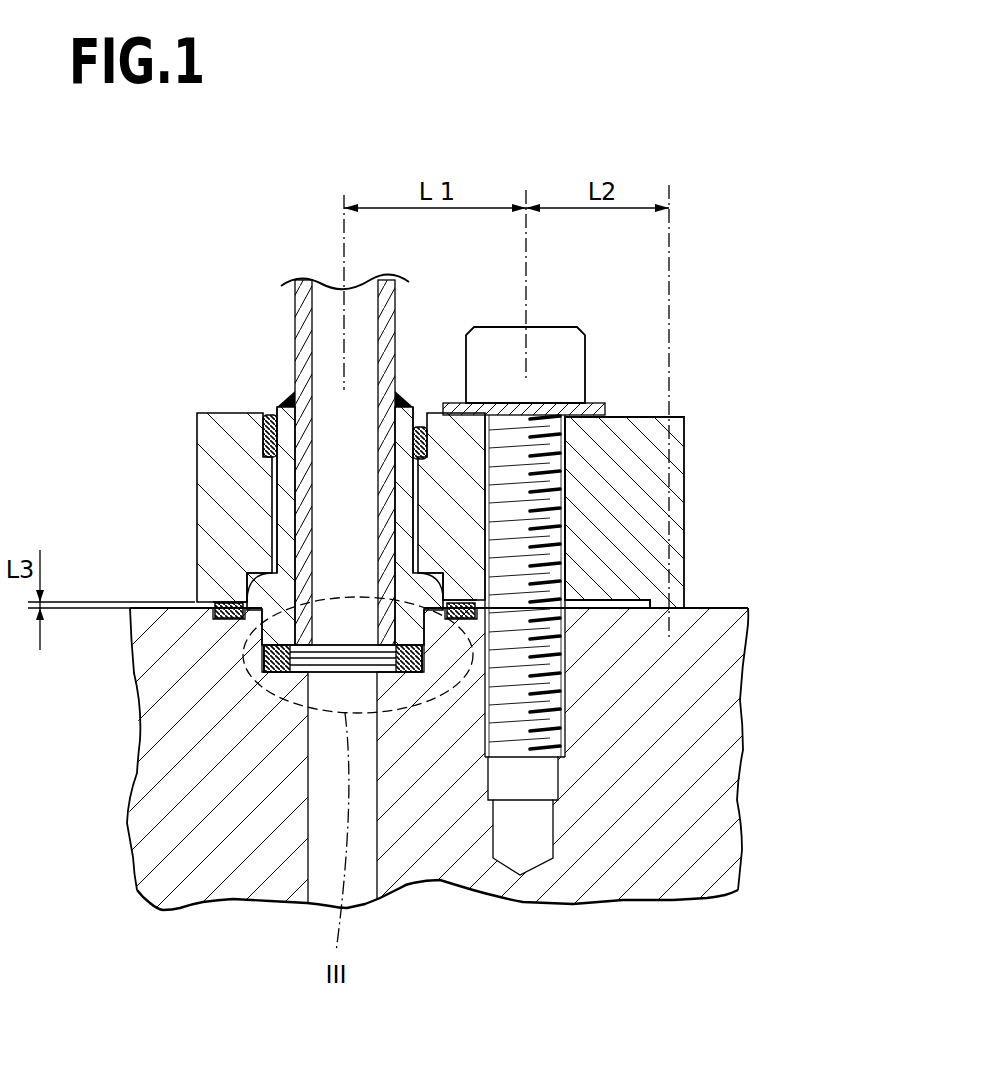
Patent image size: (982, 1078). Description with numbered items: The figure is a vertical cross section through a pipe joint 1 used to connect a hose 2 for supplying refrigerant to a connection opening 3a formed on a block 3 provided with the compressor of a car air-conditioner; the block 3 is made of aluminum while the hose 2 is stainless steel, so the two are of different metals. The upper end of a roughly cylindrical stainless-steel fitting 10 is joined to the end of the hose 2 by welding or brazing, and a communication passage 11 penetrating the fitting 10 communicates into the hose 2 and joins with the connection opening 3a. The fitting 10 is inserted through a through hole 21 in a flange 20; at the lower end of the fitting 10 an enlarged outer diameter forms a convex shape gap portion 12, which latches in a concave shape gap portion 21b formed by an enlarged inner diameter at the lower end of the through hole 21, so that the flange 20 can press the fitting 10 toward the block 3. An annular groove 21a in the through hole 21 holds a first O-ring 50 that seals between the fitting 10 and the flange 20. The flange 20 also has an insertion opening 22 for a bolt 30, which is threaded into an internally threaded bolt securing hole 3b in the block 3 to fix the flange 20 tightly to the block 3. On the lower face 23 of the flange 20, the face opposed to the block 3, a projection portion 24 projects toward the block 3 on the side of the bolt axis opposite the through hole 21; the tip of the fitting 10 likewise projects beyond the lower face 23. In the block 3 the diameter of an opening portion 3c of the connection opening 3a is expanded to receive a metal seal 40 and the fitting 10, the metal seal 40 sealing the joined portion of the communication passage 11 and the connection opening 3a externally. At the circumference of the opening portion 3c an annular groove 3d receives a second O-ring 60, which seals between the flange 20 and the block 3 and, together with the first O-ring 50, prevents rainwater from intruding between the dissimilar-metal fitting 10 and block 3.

The pipe joint 1 is at (688, 137).
The hose 2 is at (295, 355).
The block 3 is at (760, 815).
The connection opening 3a is at (315, 805).
The bolt securing hole 3b is at (560, 705).
The opening portion 3c is at (258, 650).
The annular groove 3d is at (228, 608).
The fitting 10 is at (405, 415).
The communication passage 11 is at (320, 515).
The convex shape gap portion 12 is at (565, 532).
The flange 20 is at (676, 415).
The through hole 21 is at (290, 535).
The annular groove 21a is at (268, 415).
The concave shape gap portion 21b is at (235, 585).
The insertion opening 22 is at (565, 470).
The lower face 23 is at (752, 627).
The projection portion 24 is at (686, 590).
The bolt 30 is at (553, 350).
The metal seal 40 is at (383, 672).
The first O-ring 50 is at (433, 428).
The second O-ring 60 is at (456, 614).